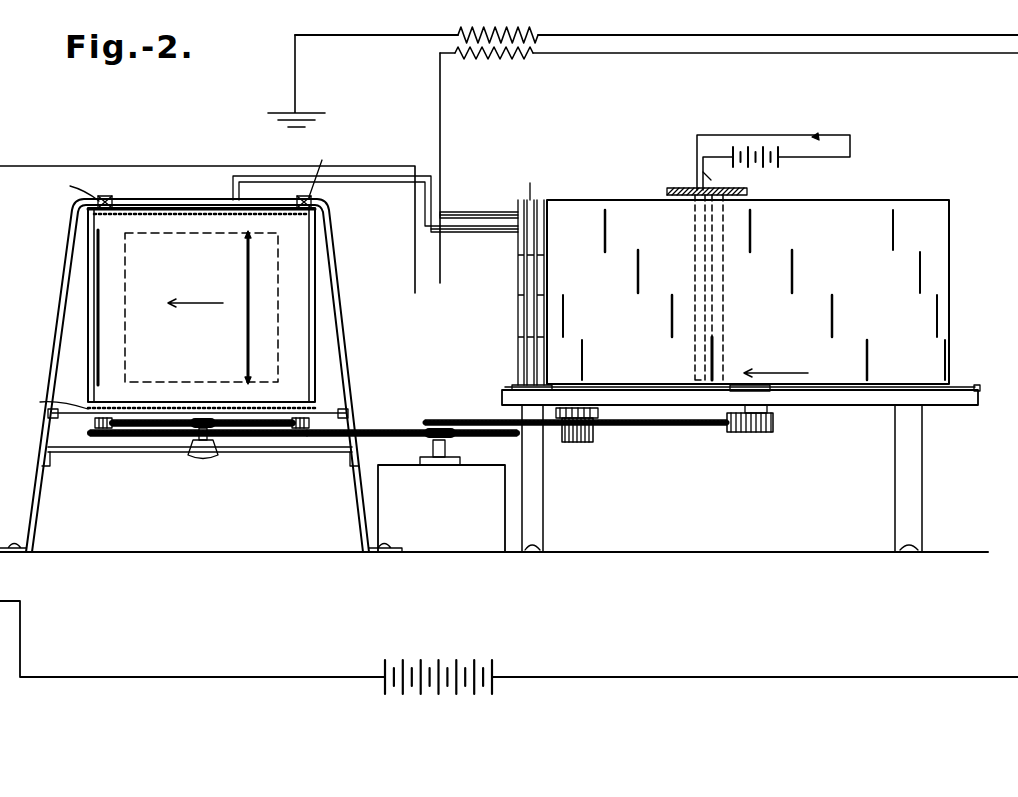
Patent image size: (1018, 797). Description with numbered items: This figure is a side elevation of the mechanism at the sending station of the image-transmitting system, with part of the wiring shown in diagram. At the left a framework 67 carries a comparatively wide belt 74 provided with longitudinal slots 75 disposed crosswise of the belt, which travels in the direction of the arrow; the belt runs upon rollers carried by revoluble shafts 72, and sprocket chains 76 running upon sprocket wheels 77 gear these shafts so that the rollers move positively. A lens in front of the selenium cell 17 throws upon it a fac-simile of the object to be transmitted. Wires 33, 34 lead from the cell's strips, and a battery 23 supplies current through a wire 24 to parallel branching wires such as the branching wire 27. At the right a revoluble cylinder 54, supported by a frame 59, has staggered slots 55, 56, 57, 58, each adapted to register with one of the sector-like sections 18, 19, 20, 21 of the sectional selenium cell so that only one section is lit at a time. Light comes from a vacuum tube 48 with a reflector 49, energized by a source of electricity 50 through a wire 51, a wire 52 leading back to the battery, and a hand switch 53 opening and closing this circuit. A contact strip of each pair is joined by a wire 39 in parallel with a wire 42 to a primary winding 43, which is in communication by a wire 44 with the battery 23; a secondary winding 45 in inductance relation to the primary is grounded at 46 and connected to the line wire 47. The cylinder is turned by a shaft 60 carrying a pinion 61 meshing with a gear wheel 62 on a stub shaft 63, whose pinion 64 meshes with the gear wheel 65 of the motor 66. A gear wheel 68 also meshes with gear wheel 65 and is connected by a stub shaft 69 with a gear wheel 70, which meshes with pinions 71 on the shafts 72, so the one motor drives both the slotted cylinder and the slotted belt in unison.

The selenium cell 17 is at (278, 347).
The section 18 is at (544, 212).
The section 19 is at (518, 271).
The section 20 is at (520, 308).
The section 21 is at (520, 354).
The battery 23 is at (455, 668).
The wire 24 is at (171, 165).
The branching wire 27 is at (492, 234).
The wire 33 is at (341, 184).
The wire 34 is at (233, 180).
The wire 39 is at (470, 212).
The wire 42 is at (441, 104).
The primary winding 43 is at (483, 59).
The wire 44 is at (646, 54).
The secondary winding 45 is at (494, 33).
The ground 46 is at (298, 112).
The line wire 47 is at (863, 35).
The vacuum tube 48 is at (690, 187).
The reflector 49 is at (750, 192).
The source of electricity 50 is at (772, 164).
The wire 51 is at (719, 177).
The wire 52 is at (760, 135).
The hand switch 53 is at (813, 137).
The revoluble cylinder 54 is at (866, 230).
The slot 55 is at (606, 226).
The slot 56 is at (639, 266).
The slot 57 is at (670, 336).
The slot 58 is at (716, 360).
The frame 59 is at (873, 406).
The shaft 60 is at (770, 410).
The pinion 61 is at (770, 433).
The gear wheel 62 is at (661, 427).
The stub shaft 63 is at (577, 444).
The pinion 64 is at (596, 437).
The gear wheel 65 is at (385, 430).
The motor 66 is at (441, 492).
The framework 67 is at (37, 506).
The gear wheel 68 is at (146, 437).
The stub shaft 69 is at (196, 442).
The gear wheel 70 is at (250, 428).
The pinion 71 is at (95, 424).
The revoluble shaft 72 is at (105, 198).
The belt 74 is at (206, 266).
The longitudinal slot 75 is at (243, 337).
The sprocket chain 76 is at (196, 207).
The sprocket wheel 77 is at (175, 277).